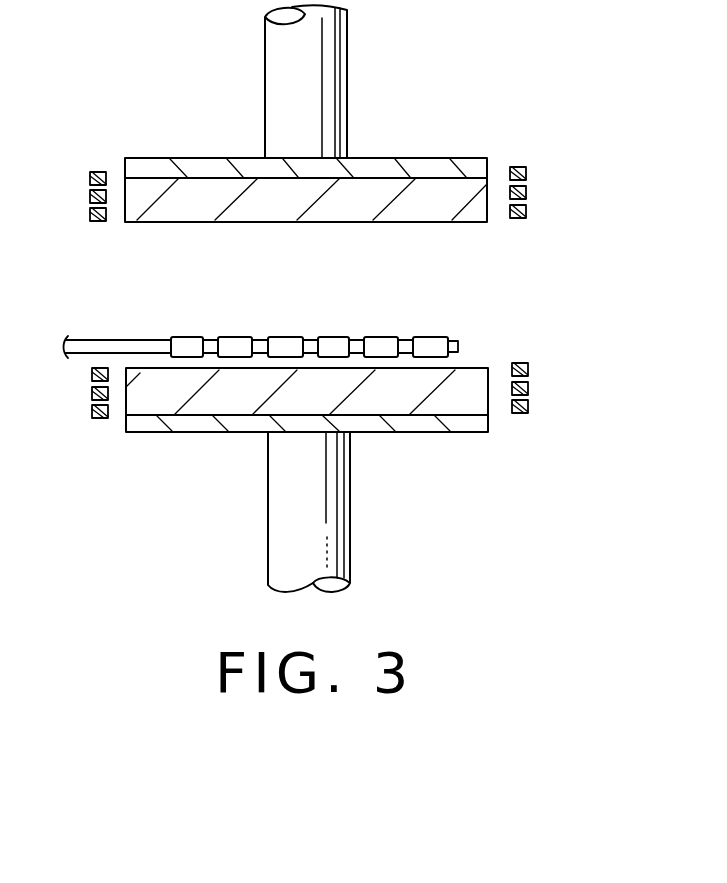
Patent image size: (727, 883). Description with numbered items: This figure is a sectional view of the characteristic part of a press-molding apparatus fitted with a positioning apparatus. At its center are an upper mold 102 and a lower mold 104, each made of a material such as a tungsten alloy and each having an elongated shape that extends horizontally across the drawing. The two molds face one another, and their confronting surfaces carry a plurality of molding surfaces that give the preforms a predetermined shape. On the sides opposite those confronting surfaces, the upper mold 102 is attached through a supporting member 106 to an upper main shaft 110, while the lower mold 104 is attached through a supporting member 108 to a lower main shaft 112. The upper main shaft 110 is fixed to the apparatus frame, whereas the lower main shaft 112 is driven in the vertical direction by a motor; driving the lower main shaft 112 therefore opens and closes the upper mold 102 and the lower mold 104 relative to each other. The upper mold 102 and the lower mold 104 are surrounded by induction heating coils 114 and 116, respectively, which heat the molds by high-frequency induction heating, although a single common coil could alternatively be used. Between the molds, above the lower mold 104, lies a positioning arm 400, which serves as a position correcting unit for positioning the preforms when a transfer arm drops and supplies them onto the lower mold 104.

The upper mold 102 is at (337, 207).
The lower mold 104 is at (455, 400).
The supporting member 106 is at (423, 162).
The supporting member 108 is at (193, 425).
The upper main shaft 110 is at (333, 60).
The lower main shaft 112 is at (337, 520).
The induction heating coil 114 is at (527, 192).
The induction heating coil 116 is at (528, 368).
The positioning arm 400 is at (479, 327).